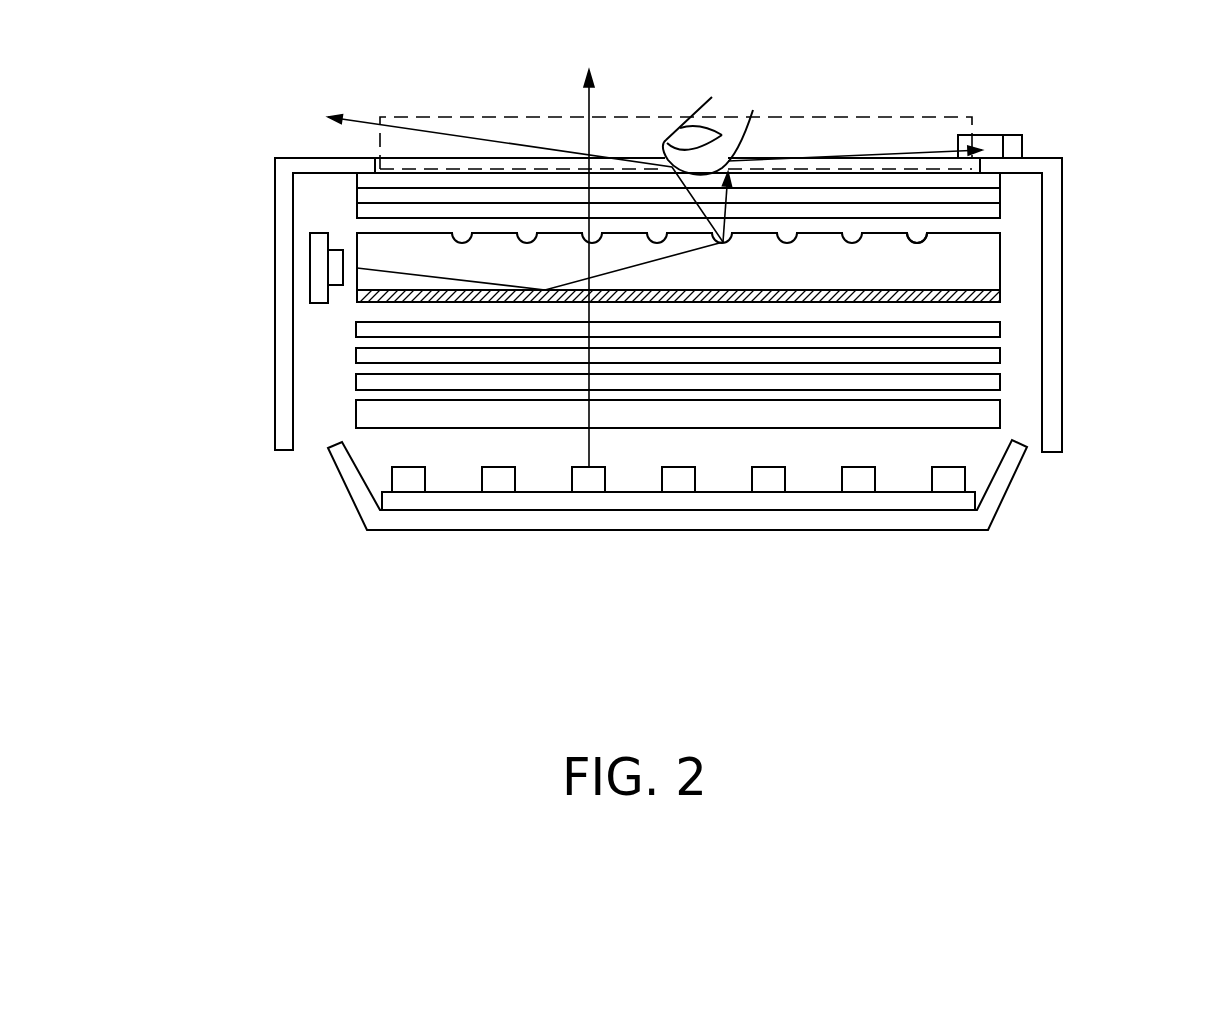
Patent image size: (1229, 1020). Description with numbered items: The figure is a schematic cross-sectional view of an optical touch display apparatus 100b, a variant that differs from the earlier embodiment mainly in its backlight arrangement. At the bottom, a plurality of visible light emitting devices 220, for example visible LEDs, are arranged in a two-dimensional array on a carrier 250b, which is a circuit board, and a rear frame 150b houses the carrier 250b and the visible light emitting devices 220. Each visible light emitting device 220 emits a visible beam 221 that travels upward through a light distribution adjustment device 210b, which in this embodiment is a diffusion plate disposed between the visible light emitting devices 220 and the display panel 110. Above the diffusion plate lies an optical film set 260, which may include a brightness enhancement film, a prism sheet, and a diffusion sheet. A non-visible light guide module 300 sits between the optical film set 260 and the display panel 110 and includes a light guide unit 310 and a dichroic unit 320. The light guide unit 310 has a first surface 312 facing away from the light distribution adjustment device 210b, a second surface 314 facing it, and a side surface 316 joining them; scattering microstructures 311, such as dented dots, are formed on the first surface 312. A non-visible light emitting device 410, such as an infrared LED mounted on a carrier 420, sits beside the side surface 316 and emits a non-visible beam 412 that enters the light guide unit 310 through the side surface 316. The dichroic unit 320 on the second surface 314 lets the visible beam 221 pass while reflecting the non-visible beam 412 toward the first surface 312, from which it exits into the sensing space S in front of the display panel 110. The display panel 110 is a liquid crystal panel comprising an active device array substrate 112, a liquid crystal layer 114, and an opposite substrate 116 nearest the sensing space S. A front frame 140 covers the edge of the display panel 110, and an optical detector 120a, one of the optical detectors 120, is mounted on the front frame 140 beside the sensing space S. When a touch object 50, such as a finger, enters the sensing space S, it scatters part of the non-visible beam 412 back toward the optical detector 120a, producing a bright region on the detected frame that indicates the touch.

The optical touch display apparatus 100b is at (1170, 657).
The display panel 110 is at (560, 161).
The active device array substrate 112 is at (357, 210).
The liquid crystal layer 114 is at (358, 202).
The opposite substrate 116 is at (357, 183).
The optical detector 120 is at (1069, 117).
The optical detector 120a is at (987, 142).
The front frame 140 is at (1050, 192).
The rear frame 150b is at (803, 520).
The light distribution adjustment device 210b is at (988, 413).
The visible light emitting device 220 is at (945, 477).
The visible beam 221 is at (587, 103).
The carrier 250b is at (622, 502).
The optical film set 260 is at (1007, 320).
The non-visible light guide module 300 is at (785, 235).
The light guide unit 310 is at (990, 252).
The scattering microstructures 311 is at (922, 242).
The first surface 312 is at (970, 233).
The second surface 314 is at (950, 292).
The side surface 316 is at (357, 268).
The dichroic unit 320 is at (990, 290).
The non-visible light emitting device 410 is at (328, 250).
The carrier 420 is at (315, 265).
The non-visible beam 412 is at (358, 120).
The touch object 50 is at (716, 120).
The sensing space S is at (472, 115).